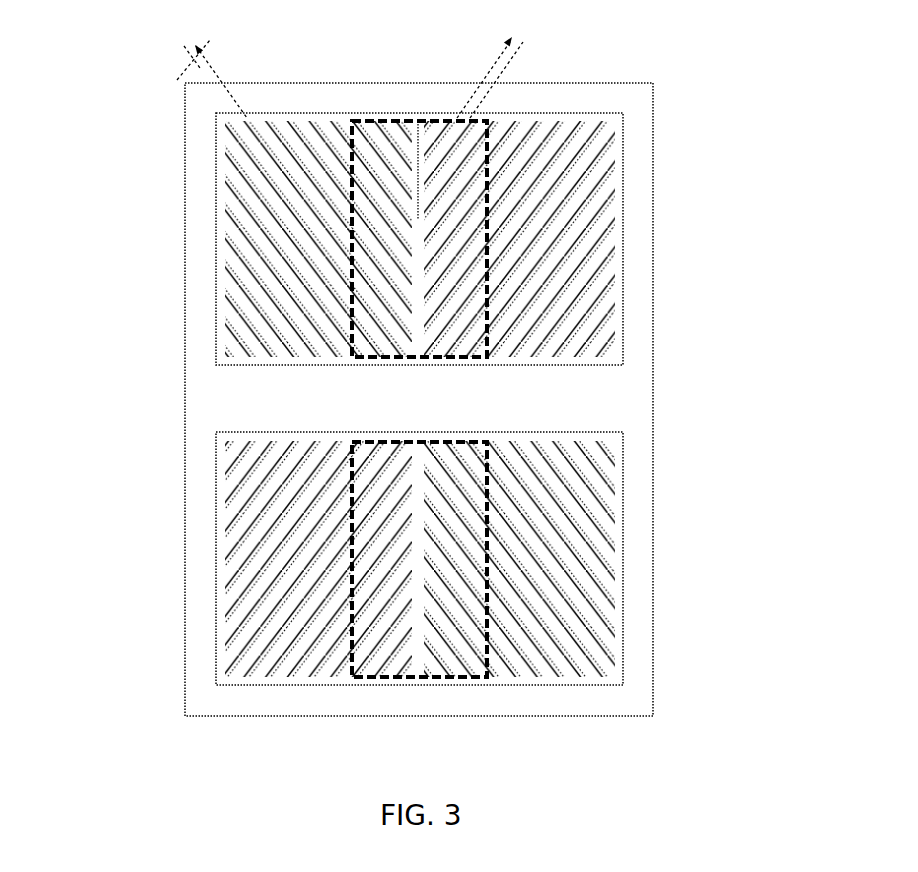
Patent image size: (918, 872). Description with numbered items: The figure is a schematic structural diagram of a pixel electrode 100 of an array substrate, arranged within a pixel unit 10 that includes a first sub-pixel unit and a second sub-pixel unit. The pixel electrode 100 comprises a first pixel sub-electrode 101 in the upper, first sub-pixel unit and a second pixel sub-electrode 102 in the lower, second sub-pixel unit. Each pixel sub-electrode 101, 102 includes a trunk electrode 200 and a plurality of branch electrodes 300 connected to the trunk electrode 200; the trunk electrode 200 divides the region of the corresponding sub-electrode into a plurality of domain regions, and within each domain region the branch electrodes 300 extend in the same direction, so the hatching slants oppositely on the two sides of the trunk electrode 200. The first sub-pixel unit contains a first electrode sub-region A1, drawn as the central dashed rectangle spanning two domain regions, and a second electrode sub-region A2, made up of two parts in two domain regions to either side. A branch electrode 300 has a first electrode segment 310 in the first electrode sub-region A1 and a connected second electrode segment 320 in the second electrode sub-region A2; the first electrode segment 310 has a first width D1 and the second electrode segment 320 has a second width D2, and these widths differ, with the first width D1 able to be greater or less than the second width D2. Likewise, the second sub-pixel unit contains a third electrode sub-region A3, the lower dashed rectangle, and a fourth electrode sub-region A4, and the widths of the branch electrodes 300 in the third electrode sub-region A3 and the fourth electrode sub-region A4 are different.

The pixel unit 10 is at (652, 67).
The pixel electrode 100 is at (740, 337).
The first pixel sub-electrode 101 is at (623, 364).
The second pixel sub-electrode 102 is at (623, 433).
The trunk electrode 200 is at (418, 121).
The branch electrodes 300 is at (97, 92).
The first electrode segment 310 is at (350, 272).
The second electrode segment 320 is at (258, 131).
The first electrode sub-region A1 is at (404, 121).
The second electrode sub-region A2 is at (548, 120).
The third electrode sub-region A3 is at (372, 677).
The fourth electrode sub-region A4 is at (617, 596).
The first width D1 is at (502, 77).
The second width D2 is at (199, 46).